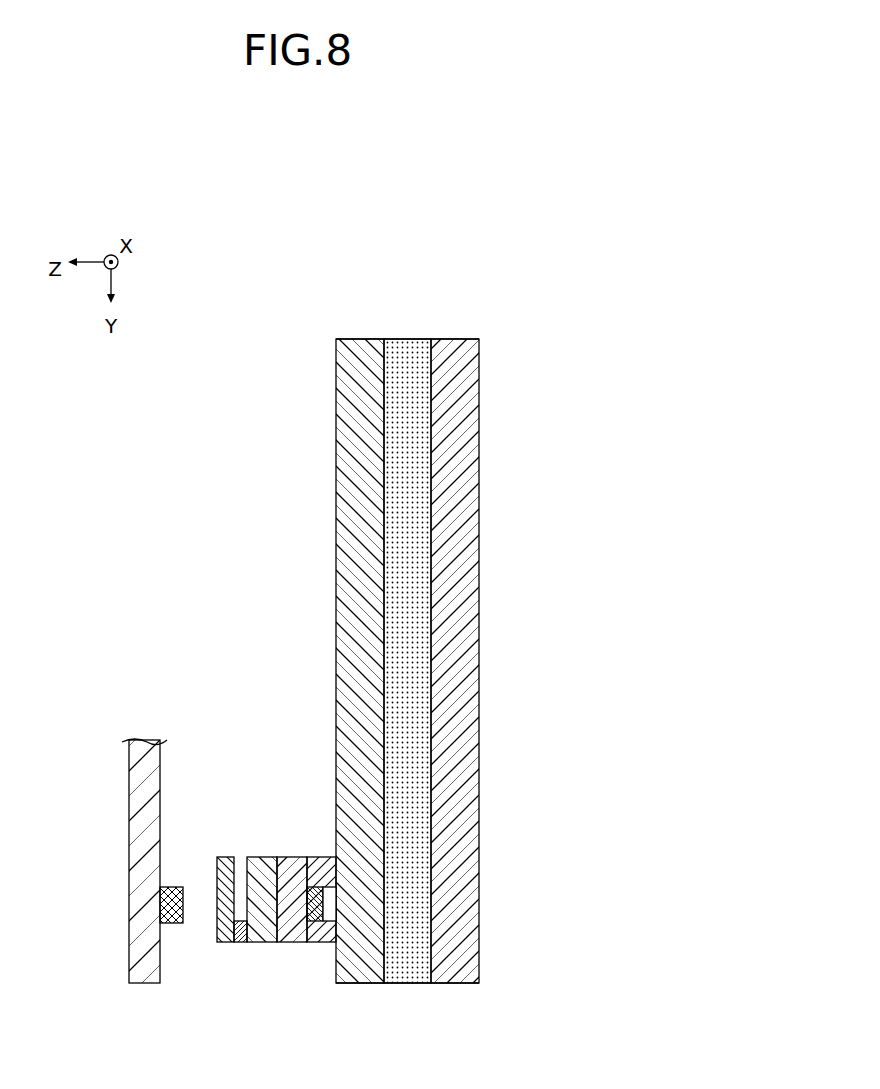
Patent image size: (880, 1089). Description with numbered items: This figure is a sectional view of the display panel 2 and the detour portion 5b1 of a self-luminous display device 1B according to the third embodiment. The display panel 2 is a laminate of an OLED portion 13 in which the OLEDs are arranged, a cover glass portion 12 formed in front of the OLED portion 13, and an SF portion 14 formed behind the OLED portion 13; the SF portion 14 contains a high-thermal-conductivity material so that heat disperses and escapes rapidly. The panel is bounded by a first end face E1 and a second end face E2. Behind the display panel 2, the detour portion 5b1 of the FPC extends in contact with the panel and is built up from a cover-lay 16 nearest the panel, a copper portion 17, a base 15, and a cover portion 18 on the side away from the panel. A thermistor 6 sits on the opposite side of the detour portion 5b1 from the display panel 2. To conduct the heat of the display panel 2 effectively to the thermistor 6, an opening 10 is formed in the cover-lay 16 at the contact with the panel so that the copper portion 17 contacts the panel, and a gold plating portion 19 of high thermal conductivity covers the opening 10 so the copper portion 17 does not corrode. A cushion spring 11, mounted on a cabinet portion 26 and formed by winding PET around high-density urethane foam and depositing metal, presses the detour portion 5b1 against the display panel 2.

The self-luminous display device 1B is at (487, 274).
The display panel 2 is at (407, 708).
The cover glass (CG) portion 12 is at (455, 687).
The OLED portion 13 is at (409, 984).
The SF portion 14 is at (362, 984).
The first end face E1 is at (456, 338).
The second end face E2 is at (468, 984).
The cabinet portion 26 is at (144, 975).
The cushion spring 11 is at (170, 893).
The thermistor 6 is at (242, 921).
The detour portion 5b1 is at (271, 927).
The cover portion 18 is at (227, 942).
The base 15 is at (262, 942).
The copper portion 17 is at (293, 942).
The cover-lay 16 is at (305, 906).
The gold plating portion 19 is at (313, 891).
The opening 10 is at (330, 893).